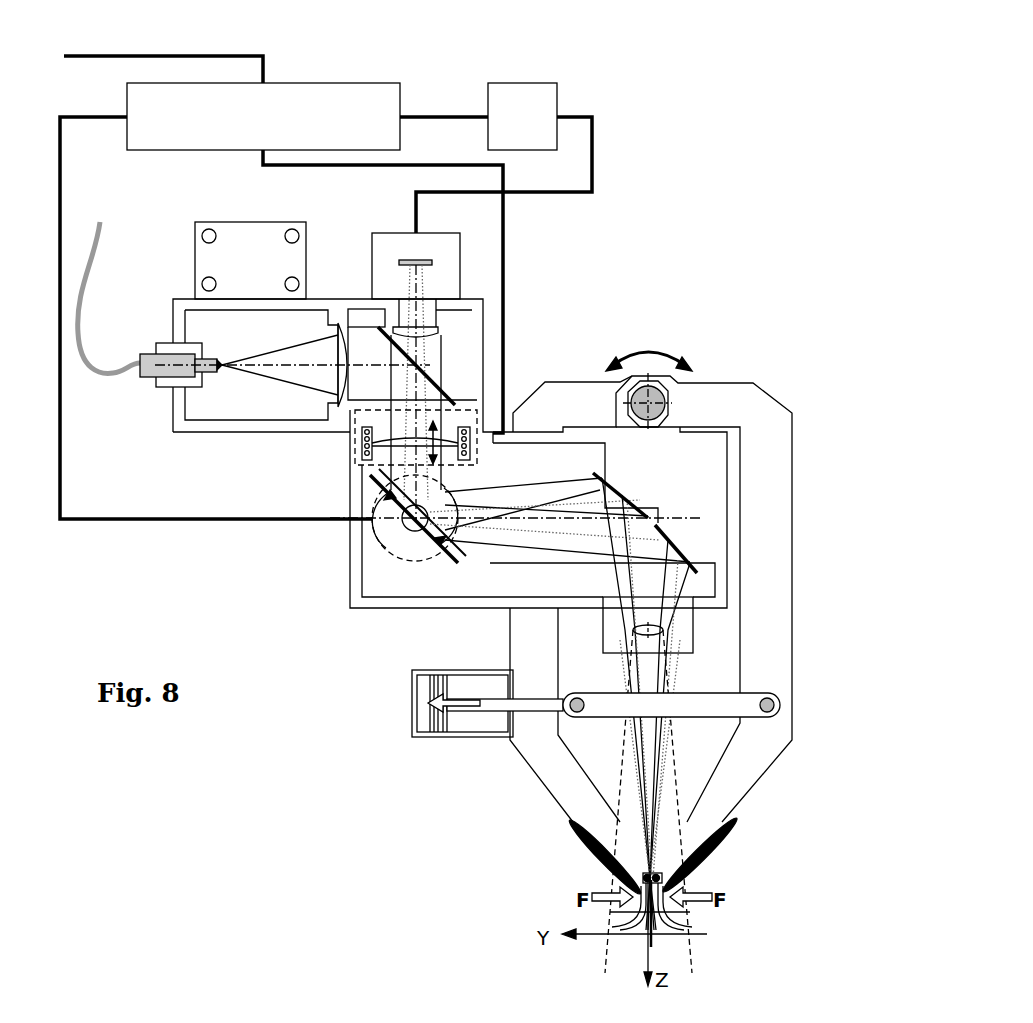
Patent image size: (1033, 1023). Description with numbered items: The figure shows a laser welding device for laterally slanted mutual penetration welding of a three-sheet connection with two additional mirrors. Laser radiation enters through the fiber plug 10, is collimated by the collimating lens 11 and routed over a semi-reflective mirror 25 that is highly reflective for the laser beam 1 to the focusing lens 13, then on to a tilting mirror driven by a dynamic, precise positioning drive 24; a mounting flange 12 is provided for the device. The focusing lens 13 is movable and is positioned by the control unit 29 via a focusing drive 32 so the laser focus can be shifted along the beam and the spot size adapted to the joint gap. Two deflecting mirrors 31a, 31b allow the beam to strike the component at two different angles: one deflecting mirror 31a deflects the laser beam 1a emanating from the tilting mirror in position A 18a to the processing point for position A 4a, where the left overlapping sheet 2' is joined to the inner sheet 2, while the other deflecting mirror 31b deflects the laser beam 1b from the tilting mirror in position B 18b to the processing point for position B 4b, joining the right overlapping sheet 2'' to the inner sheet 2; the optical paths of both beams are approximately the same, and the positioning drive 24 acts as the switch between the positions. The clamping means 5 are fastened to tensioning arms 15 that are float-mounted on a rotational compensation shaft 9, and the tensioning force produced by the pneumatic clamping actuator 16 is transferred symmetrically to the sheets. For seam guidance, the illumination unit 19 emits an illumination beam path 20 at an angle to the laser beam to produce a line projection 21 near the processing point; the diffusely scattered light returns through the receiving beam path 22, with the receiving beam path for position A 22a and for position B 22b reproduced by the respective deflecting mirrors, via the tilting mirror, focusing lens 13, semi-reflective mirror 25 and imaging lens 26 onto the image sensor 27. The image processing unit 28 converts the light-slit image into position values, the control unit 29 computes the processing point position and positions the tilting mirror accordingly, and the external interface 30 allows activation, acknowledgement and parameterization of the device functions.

The laser beam 1 is at (330, 398).
The laser beam for position A 1a is at (532, 558).
The laser beam for position B 1b is at (651, 543).
The sheet 2 is at (694, 948).
The overlapping sheet 2' is at (583, 966).
The overlapping sheet 2'' is at (723, 955).
The processing point for position A 4a is at (594, 879).
The processing point for position B 4b is at (719, 888).
The clamping means 5 is at (650, 856).
The compensation shaft 9 is at (684, 364).
The fiber plug 10 is at (263, 402).
The collimating lens 11 is at (306, 298).
The mounting flange 12 is at (211, 244).
The focusing lens 13 is at (335, 536).
The tensioning arm 15 is at (655, 753).
The clamping actuator 16 is at (449, 710).
The tilting mirror in position A 18a is at (344, 640).
The tilting mirror in position B 18b is at (301, 586).
The illumination unit 19 is at (718, 616).
The illumination beam path 20 is at (715, 801).
The line projection 21 is at (716, 915).
The receiving beam path 22 is at (474, 386).
The receiving beam path for position A 22a is at (560, 570).
The receiving beam path for position B 22b is at (632, 625).
The positioning drive 24 is at (346, 571).
The semi-reflective mirror 25 is at (456, 401).
The imaging lens 26 is at (475, 315).
The image sensor 27 is at (465, 258).
The image processing unit 28 is at (552, 90).
The control unit 29 is at (274, 76).
The interface 30 is at (216, 261).
The deflecting mirror for position A 31a is at (749, 533).
The deflecting mirror for position B 31b is at (718, 473).
The focusing drive 32 is at (268, 502).